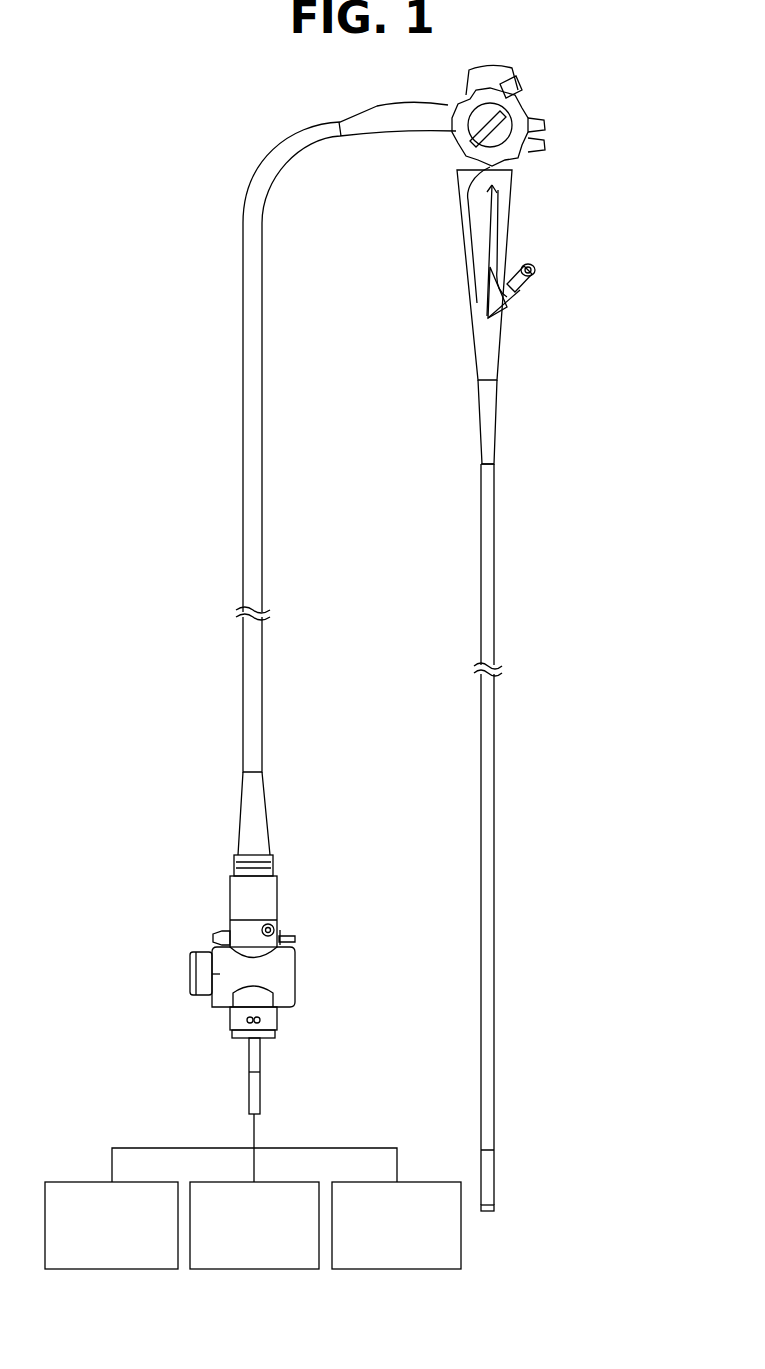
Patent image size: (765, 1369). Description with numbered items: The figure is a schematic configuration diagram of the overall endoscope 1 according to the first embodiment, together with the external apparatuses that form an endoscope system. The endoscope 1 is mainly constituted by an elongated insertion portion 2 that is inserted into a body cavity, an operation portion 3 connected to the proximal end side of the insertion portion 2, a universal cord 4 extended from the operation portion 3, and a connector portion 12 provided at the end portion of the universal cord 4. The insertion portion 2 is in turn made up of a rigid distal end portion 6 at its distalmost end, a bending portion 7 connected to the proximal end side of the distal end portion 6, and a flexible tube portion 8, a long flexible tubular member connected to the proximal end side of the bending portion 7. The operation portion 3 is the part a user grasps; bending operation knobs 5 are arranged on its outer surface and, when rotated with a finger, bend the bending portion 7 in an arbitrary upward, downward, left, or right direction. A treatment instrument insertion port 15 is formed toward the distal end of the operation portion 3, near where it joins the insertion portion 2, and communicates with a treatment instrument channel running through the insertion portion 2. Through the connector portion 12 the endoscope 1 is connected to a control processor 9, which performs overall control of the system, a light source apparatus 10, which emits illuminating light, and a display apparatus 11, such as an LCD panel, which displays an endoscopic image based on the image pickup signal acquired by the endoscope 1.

The endoscope 1 is at (603, 151).
The insertion portion 2 is at (593, 608).
The operation portion 3 is at (488, 237).
The universal cord 4 is at (257, 302).
The bending operation knobs 5 is at (520, 105).
The distal end portion 6 is at (493, 1207).
The bending portion 7 is at (490, 1162).
The flexible tube portion 8 is at (490, 700).
The control processor 9 is at (254, 1270).
The light source apparatus 10 is at (397, 1270).
The display apparatus 11 is at (112, 1270).
The connector portion 12 is at (220, 956).
The treatment instrument insertion port 15 is at (527, 290).